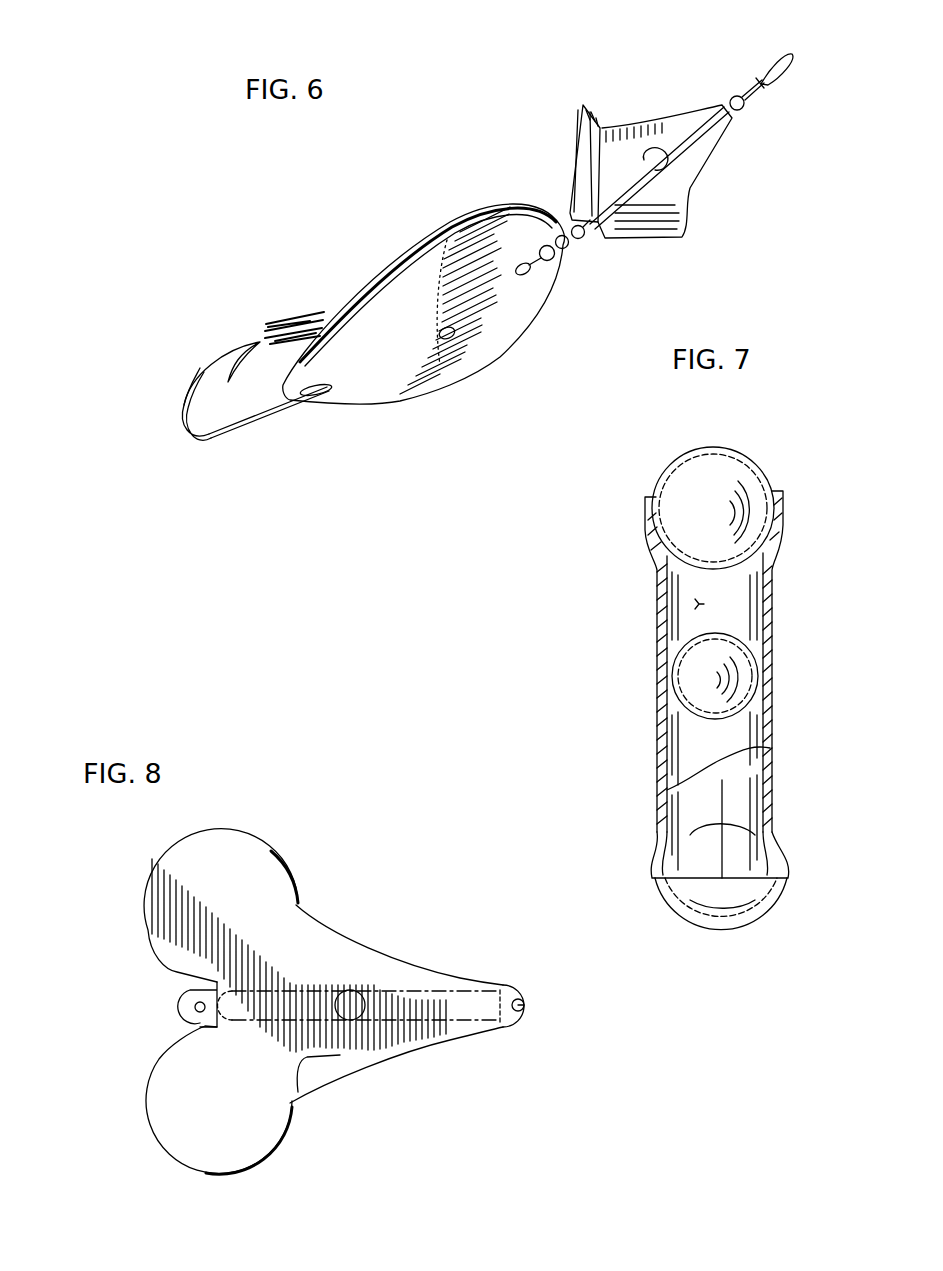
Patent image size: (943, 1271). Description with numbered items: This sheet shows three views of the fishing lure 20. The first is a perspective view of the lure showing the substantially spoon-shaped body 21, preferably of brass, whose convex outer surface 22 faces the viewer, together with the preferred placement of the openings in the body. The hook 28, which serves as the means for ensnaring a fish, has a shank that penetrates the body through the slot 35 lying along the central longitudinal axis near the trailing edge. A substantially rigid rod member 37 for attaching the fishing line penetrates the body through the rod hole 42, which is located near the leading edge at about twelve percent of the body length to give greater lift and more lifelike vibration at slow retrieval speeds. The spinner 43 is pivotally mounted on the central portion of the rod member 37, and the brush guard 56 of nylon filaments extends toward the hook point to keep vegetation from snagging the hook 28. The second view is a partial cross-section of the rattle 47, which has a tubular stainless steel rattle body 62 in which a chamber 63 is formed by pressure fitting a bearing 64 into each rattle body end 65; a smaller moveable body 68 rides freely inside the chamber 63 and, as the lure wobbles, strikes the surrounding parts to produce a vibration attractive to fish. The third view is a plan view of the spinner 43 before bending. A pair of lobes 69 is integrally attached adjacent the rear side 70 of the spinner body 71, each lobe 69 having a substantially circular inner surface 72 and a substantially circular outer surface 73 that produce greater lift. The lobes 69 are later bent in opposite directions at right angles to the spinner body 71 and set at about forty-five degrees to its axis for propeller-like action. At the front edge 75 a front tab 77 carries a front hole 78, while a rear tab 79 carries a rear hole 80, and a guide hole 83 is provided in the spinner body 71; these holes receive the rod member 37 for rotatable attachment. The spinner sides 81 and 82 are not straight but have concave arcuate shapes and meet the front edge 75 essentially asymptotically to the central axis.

In FIG. 6, the fishing lure 20 is at (424, 304).
In FIG. 6, the body 21 is at (415, 235).
In FIG. 6, the convex outer surface 22 is at (382, 306).
In FIG. 6, the hook 28 is at (217, 364).
In FIG. 6, the slot 35 is at (332, 397).
In FIG. 6, the rod member 37 is at (746, 81).
In FIG. 6, the rod hole 42 is at (523, 276).
In FIG. 6, the spinner 43 is at (681, 146).
In FIG. 8, the spinner 43 is at (322, 1002).
In FIG. 7, the rattle 47 is at (743, 669).
In FIG. 6, the brush guard 56 is at (286, 314).
In FIG. 7, the rattle body 62 is at (663, 587).
In FIG. 7, the chamber 63 is at (697, 604).
In FIG. 7, the bearing 64 is at (713, 468).
In FIG. 7, the rattle body end 65 is at (648, 496).
In FIG. 7, the moveable body 68 is at (759, 668).
In FIG. 8, the lobes 69 is at (209, 1002).
In FIG. 8, the rear side 70 is at (198, 983).
In FIG. 8, the spinner body 71 is at (430, 975).
In FIG. 8, the inner surface 72 is at (177, 972).
In FIG. 8, the outer surface 73 is at (222, 833).
In FIG. 8, the front edge 75 is at (500, 1028).
In FIG. 8, the front tab 77 is at (515, 985).
In FIG. 8, the front hole 78 is at (532, 1005).
In FIG. 8, the rear tab 79 is at (194, 1007).
In FIG. 8, the rear hole 80 is at (195, 1016).
In FIG. 8, the spinner side 81 is at (365, 942).
In FIG. 8, the spinner side 82 is at (390, 1055).
In FIG. 8, the guide hole 83 is at (300, 1087).